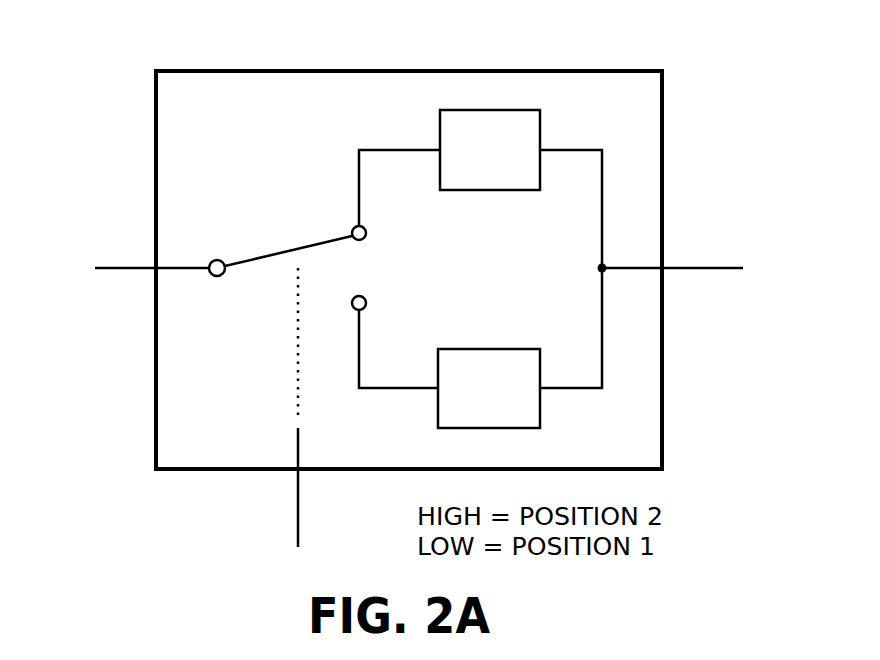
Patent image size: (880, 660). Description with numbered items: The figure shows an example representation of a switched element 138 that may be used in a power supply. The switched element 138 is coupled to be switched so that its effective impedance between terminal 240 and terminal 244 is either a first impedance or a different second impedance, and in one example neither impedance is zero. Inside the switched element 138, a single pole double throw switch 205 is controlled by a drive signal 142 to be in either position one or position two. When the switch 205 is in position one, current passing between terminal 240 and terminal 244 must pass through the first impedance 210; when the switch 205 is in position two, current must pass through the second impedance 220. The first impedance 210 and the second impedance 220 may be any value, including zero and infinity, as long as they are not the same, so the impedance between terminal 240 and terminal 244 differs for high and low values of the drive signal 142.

The switched element 138 is at (405, 62).
The terminal 240 is at (130, 260).
The single pole double throw switch SA 205 is at (252, 245).
The impedance Z1 210 is at (485, 198).
The impedance Z2 220 is at (485, 340).
The terminal 244 is at (687, 260).
The drive signal 142 is at (312, 508).